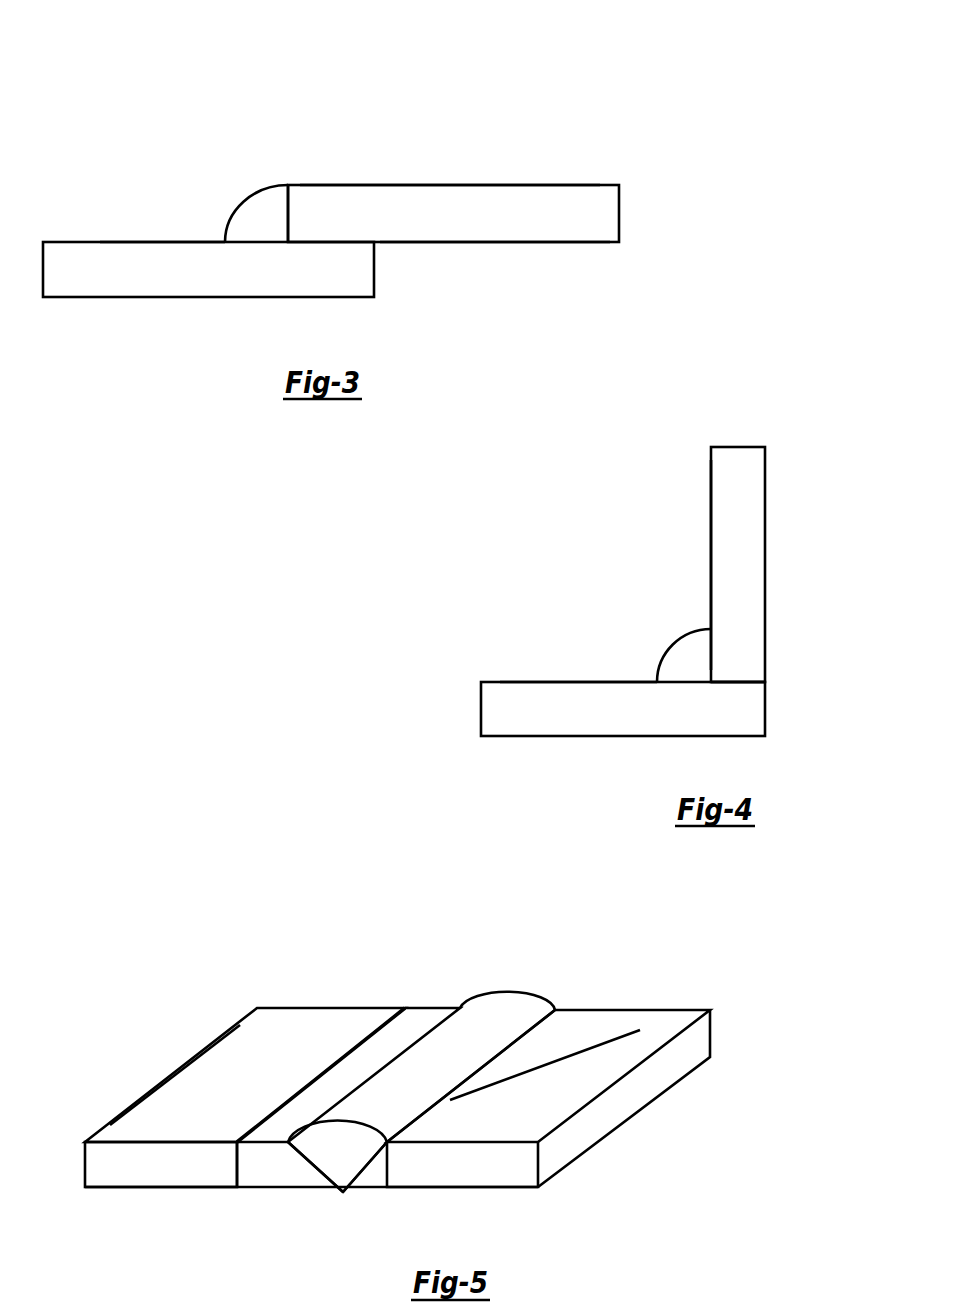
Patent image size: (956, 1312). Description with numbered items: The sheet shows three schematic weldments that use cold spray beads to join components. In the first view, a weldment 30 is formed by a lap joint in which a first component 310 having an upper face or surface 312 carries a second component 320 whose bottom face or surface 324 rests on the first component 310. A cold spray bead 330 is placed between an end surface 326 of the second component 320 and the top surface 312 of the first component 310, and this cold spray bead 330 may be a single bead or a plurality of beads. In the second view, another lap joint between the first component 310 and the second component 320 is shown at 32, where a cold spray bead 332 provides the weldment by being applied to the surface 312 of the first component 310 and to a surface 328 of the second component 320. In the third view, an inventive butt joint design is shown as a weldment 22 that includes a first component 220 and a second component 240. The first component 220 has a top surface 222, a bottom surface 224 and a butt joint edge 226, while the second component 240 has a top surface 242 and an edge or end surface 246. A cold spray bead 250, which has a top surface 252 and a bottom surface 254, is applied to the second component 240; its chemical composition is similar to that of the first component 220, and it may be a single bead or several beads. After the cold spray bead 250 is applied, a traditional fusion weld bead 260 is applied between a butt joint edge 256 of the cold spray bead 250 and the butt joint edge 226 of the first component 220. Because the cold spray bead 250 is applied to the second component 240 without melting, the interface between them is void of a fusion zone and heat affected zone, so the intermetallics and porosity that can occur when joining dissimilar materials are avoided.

In FIG. 3, the weldment 30 is at (181, 88).
In FIG. 4, the welded assembly (T-joint) 32 is at (584, 504).
In FIG. 3, the first component 310 is at (199, 305).
In FIG. 4, the first component 310 is at (635, 745).
In FIG. 3, the upper face or surface 312 is at (147, 240).
In FIG. 4, the upper face or surface 312 is at (577, 682).
In FIG. 3, the second component 320 is at (538, 180).
In FIG. 4, the second component 320 is at (739, 440).
In FIG. 3, the bottom face or surface 324 is at (474, 244).
In FIG. 3, the end surface 326 is at (292, 207).
In FIG. 4, the end surface 326 is at (737, 682).
In FIG. 3, the surface 328 is at (390, 185).
In FIG. 4, the surface 328 is at (711, 535).
In FIG. 3, the cold spray bead 330 is at (252, 198).
In FIG. 4, the cold spray bead 332 is at (688, 633).
In FIG. 5, the weldment 22 is at (186, 921).
In FIG. 5, the first component 220 is at (674, 1065).
In FIG. 5, the top surface 222 is at (565, 1096).
In FIG. 5, the bottom surface 224 is at (495, 1188).
In FIG. 5, the butt joint edge 226 is at (367, 1163).
In FIG. 5, the second component 240 is at (296, 1000).
In FIG. 5, the top surface 242 is at (196, 1075).
In FIG. 5, the edge or end surface 246 is at (233, 1163).
In FIG. 5, the cold spray bead 250 is at (431, 998).
In FIG. 5, the top surface 252 is at (322, 1092).
In FIG. 5, the bottom surface 254 is at (272, 1190).
In FIG. 5, the butt joint edge 256 is at (312, 1168).
In FIG. 5, the fusion weld bead 260 is at (500, 1010).